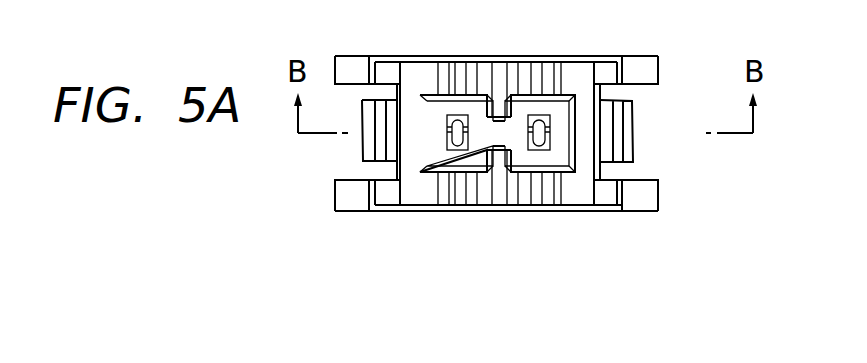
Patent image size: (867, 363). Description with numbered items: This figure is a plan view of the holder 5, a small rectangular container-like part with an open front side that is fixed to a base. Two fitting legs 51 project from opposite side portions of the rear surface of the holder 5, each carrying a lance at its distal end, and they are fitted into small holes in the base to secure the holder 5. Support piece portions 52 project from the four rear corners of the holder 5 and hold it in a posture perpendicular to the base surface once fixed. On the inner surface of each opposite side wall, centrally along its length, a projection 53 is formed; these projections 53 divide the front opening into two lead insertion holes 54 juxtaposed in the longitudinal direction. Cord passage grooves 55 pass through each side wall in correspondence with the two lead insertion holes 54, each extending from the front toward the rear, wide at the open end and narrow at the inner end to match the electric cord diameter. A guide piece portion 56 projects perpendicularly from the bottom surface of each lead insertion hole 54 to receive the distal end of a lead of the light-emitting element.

The holder 5 is at (635, 173).
The fitting leg 51 is at (363, 138).
The support piece portion 52 is at (345, 202).
The projection 53 is at (500, 88).
The lead insertion hole 54 is at (443, 157).
The cord passage groove 55 is at (457, 75).
The guide piece portion 56 is at (537, 135).